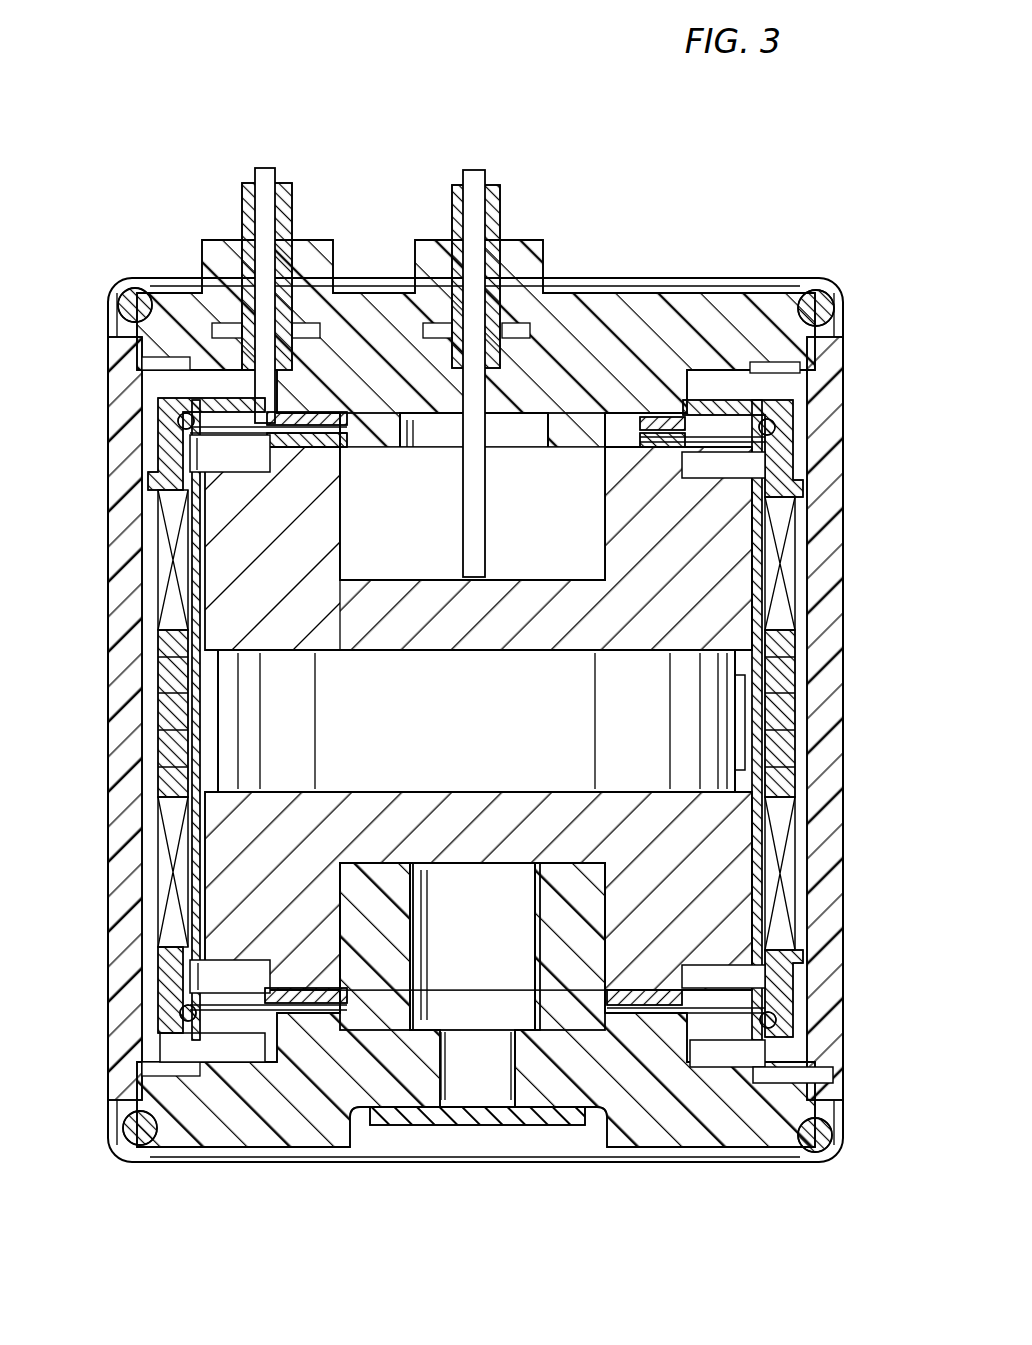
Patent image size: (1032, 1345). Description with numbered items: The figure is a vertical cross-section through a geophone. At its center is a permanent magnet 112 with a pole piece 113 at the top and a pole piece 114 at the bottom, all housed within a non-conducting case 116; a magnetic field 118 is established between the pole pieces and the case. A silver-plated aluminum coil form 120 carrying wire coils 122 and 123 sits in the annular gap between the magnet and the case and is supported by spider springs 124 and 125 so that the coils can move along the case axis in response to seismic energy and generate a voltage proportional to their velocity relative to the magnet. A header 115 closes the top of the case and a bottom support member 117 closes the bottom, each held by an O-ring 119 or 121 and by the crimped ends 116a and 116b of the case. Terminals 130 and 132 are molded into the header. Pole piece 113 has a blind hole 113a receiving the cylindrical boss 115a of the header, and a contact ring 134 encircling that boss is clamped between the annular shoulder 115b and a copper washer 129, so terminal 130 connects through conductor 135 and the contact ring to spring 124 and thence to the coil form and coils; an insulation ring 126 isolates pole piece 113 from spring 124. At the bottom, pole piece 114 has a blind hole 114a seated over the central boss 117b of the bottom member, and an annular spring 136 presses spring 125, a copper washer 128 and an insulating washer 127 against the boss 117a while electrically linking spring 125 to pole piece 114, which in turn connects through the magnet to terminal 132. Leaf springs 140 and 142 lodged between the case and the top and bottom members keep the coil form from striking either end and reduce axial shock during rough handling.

The magnet 112 is at (481, 721).
The pole piece 113 is at (705, 612).
The blind hole 113a is at (338, 503).
The pole piece 114 is at (705, 826).
The blind hole 114a is at (428, 907).
The header 115 is at (600, 300).
The cylindrical boss 115a is at (572, 455).
The annular shoulder 115b is at (665, 400).
The case 116 is at (823, 550).
The crimped end 116a is at (130, 288).
The crimped end 116b is at (132, 1152).
The bottom support member 117 is at (640, 1132).
The boss 117a is at (290, 1025).
The central boss 117b is at (433, 945).
The magnetic field 118 is at (758, 466).
The O-ring 119 is at (825, 311).
The coil form 120 is at (165, 712).
The O-ring 121 is at (826, 1136).
The wire coil 122 is at (165, 567).
The wire coil 123 is at (160, 862).
The spring 124 is at (222, 440).
The spring 125 is at (200, 1026).
The insulation ring 126 is at (268, 440).
The insulating washer 127 is at (700, 1015).
The copper washer 128 is at (690, 1003).
The copper washer 129 is at (695, 415).
The terminal 130 is at (263, 166).
The terminal 132 is at (471, 168).
The contact ring 134 is at (690, 430).
The conductor 135 is at (248, 332).
The annular spring 136 is at (524, 580).
The leaf spring 140 is at (790, 370).
The leaf spring 142 is at (780, 1065).